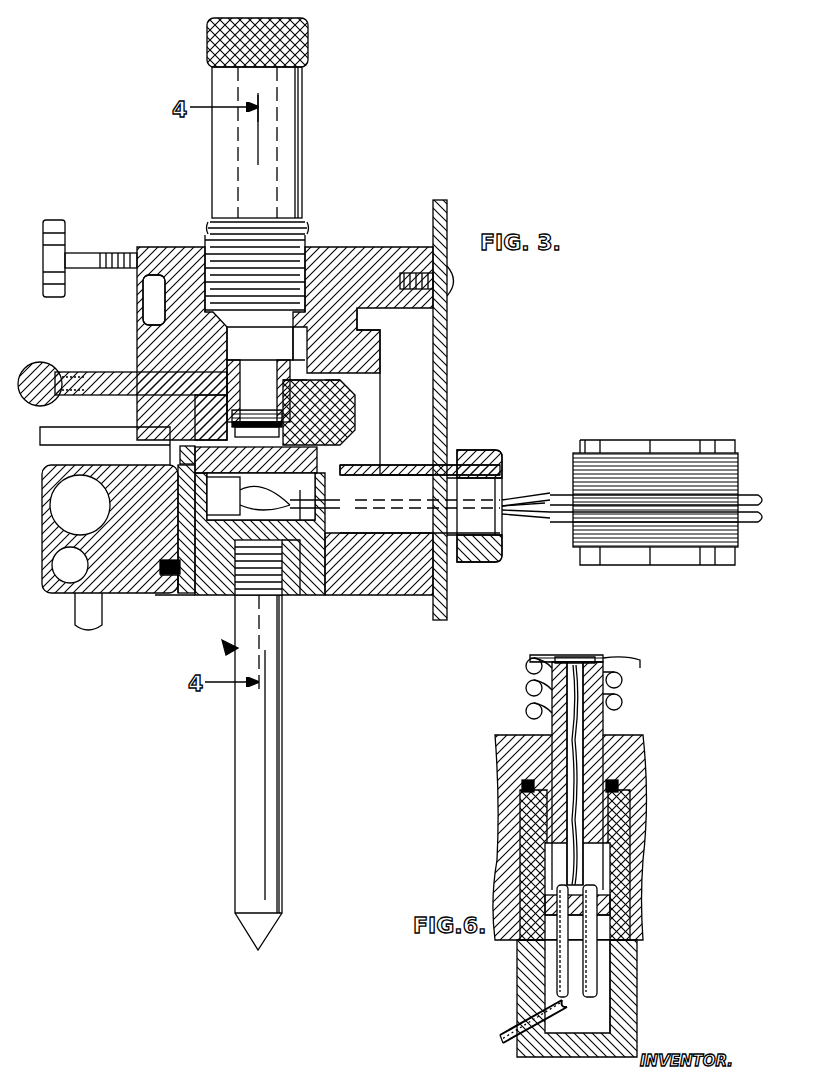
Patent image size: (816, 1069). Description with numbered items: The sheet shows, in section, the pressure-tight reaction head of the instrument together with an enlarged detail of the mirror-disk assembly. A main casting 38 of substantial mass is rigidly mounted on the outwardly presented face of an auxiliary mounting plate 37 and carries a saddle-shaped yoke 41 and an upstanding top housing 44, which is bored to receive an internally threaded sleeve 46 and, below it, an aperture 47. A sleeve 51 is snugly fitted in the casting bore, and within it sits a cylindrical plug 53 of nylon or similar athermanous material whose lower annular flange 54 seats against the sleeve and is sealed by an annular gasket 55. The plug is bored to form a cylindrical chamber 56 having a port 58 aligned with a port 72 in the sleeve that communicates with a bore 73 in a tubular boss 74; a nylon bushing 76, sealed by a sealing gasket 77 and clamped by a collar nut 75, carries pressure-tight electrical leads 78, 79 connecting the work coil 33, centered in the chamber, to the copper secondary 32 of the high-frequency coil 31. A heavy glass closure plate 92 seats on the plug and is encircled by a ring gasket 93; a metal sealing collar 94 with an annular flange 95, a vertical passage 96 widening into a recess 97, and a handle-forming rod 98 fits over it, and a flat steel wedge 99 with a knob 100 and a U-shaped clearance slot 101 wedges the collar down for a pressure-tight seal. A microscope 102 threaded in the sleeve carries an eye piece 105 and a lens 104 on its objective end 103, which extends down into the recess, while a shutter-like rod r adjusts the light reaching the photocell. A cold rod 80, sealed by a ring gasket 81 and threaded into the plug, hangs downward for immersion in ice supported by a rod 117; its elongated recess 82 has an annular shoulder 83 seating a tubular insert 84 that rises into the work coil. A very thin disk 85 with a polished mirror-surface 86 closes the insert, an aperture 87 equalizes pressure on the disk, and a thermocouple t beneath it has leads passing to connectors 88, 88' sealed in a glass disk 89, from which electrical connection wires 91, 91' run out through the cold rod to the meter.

In FIG. 3, the eye piece 105 is at (305, 38).
In FIG. 3, the microscope 102 is at (290, 148).
In FIG. 3, the shutter-like rod r is at (125, 248).
In FIG. 3, the top housing 44 is at (143, 298).
In FIG. 3, the internally threaded sleeve 46 is at (312, 308).
In FIG. 3, the saddle-shaped yoke 41 is at (368, 358).
In FIG. 3, the auxiliary mounting plate 37 is at (447, 374).
In FIG. 3, the objective end 103 is at (260, 343).
In FIG. 3, the U-shaped clearance slot 101 is at (227, 365).
In FIG. 3, the lens 104 is at (258, 408).
In FIG. 3, the aperture 47 is at (300, 362).
In FIG. 3, the glass closure plate 92 is at (340, 412).
In FIG. 3, the recess 97 is at (312, 390).
In FIG. 3, the vertical passage 96 is at (328, 392).
In FIG. 3, the sealing collar 94 is at (192, 413).
In FIG. 3, the flat steel wedge 99 is at (105, 372).
In FIG. 3, the knob 100 is at (42, 362).
In FIG. 3, the handle-forming rod 98 is at (40, 436).
In FIG. 3, the annular flange 95 is at (180, 455).
In FIG. 3, the ring gasket 93 is at (150, 474).
In FIG. 3, the cylindrical chamber 56 is at (178, 515).
In FIG. 3, the rod 117 is at (78, 617).
In FIG. 3, the sleeve 51 is at (160, 590).
In FIG. 3, the annular flange 54 is at (176, 596).
In FIG. 3, the annular gasket 55 is at (192, 600).
In FIG. 3, the sealing gasket 77 is at (320, 462).
In FIG. 3, the bore 73 is at (398, 468).
In FIG. 3, the tubular boss 74 is at (397, 462).
In FIG. 3, the cylindrical plug 53 is at (208, 598).
In FIG. 6, the cylindrical plug 53 is at (497, 780).
In FIG. 3, the work coil 33 is at (240, 493).
In FIG. 6, the work coil 33 is at (526, 685).
In FIG. 3, the port 58 is at (305, 498).
In FIG. 3, the port 72 is at (290, 596).
In FIG. 3, the ring gasket 81 is at (285, 598).
In FIG. 6, the ring gasket 81 is at (640, 784).
In FIG. 3, the main casting 38 is at (405, 598).
In FIG. 3, the cold rod 80 is at (240, 838).
In FIG. 6, the cold rod 80 is at (630, 1034).
In FIG. 3, the thermocouple t is at (220, 643).
In FIG. 6, the thermocouple t is at (583, 730).
In FIG. 3, the collar nut 75 is at (495, 456).
In FIG. 3, the nylon bushing 76 is at (488, 482).
In FIG. 3, the electrical lead 78 is at (552, 490).
In FIG. 3, the electrical lead 79 is at (535, 520).
In FIG. 3, the copper secondary 32 is at (752, 492).
In FIG. 3, the high-frequency coil 31 is at (680, 440).
In FIG. 6, the tubular insert 84 is at (640, 818).
In FIG. 6, the disk 85 is at (597, 655).
In FIG. 6, the mirror-surface 86 is at (570, 654).
In FIG. 6, the aperture 87 is at (552, 698).
In FIG. 6, the glass disk 89 is at (612, 905).
In FIG. 6, the annular shoulder 83 is at (612, 935).
In FIG. 6, the connector 88 is at (524, 941).
In FIG. 6, the connector 88' is at (625, 943).
In FIG. 6, the elongated recess 82 is at (612, 975).
In FIG. 6, the electrical connection wire 91 is at (508, 1022).
In FIG. 6, the electrical connection wire 91' is at (491, 1052).